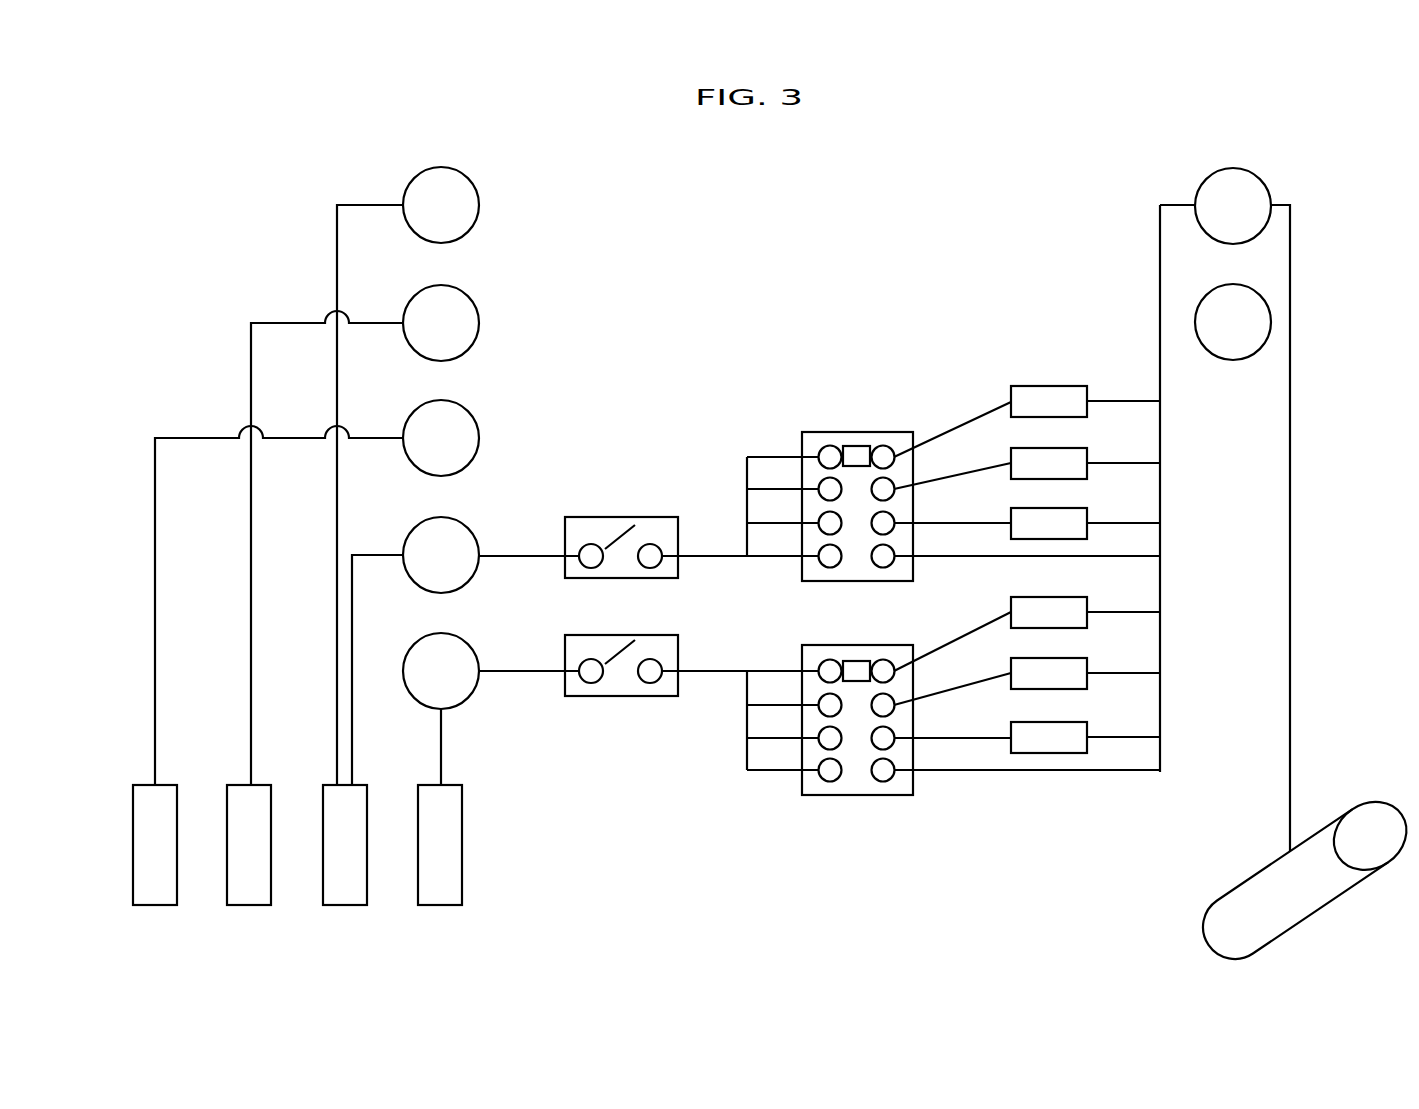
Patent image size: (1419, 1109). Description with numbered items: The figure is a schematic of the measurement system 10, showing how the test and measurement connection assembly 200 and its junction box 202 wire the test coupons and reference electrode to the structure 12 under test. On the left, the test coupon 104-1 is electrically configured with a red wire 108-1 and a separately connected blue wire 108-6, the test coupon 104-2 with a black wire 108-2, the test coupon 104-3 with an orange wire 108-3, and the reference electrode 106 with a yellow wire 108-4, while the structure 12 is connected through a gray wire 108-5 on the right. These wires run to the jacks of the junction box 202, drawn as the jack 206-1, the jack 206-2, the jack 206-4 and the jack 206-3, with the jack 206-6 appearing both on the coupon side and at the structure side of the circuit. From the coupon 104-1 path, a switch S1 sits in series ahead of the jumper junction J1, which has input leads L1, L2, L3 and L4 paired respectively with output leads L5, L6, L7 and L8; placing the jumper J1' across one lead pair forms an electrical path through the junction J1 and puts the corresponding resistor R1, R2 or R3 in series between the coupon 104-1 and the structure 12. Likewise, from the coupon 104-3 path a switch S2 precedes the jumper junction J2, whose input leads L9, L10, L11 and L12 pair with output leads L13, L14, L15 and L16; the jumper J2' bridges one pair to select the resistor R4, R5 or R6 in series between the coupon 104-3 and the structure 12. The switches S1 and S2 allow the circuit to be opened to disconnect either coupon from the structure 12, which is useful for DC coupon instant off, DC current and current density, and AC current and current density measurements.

The measurement system 10 is at (288, 116).
The test and measurement connection assembly 200 is at (925, 138).
The junction box 202 is at (1121, 97).
The structure 12 is at (1259, 877).
The test coupon 104-1 is at (342, 905).
The test coupon 104-2 is at (148, 905).
The test coupon 104-3 is at (438, 905).
The reference electrode 106 is at (247, 905).
The red wire 108-1 is at (337, 700).
The black wire 108-2 is at (155, 647).
The orange wire 108-3 is at (441, 740).
The yellow wire 108-4 is at (251, 618).
The gray wire 108-5 is at (1292, 503).
The blue wire 108-6 is at (352, 740).
The jack 206-1 is at (455, 168).
The jack 206-2 is at (462, 400).
The jack 206-3 is at (455, 633).
The jack 206-4 is at (455, 285).
The jack 206-6 is at (455, 517).
The switch S1 is at (626, 517).
The switch S2 is at (615, 697).
The jumper junction J1 is at (819, 468).
The jumper J1' is at (860, 398).
The jumper junction J2 is at (830, 753).
The jumper J2' is at (836, 644).
The input lead L1 is at (830, 456).
The input lead L2 is at (830, 489).
The input lead L3 is at (830, 523).
The input lead L4 is at (830, 556).
The output lead L5 is at (883, 456).
The output lead L6 is at (883, 489).
The output lead L7 is at (883, 523).
The output lead L8 is at (883, 556).
The input lead L9 is at (830, 671).
The input lead L10 is at (830, 705).
The input lead L11 is at (830, 738).
The input lead L12 is at (830, 770).
The output lead L13 is at (883, 671).
The output lead L14 is at (883, 705).
The output lead L15 is at (883, 738).
The output lead L16 is at (883, 770).
The resistor R1 is at (1036, 412).
The resistor R2 is at (1036, 474).
The resistor R3 is at (1036, 534).
The resistor R4 is at (1036, 623).
The resistor R5 is at (1036, 684).
The resistor R6 is at (1036, 748).